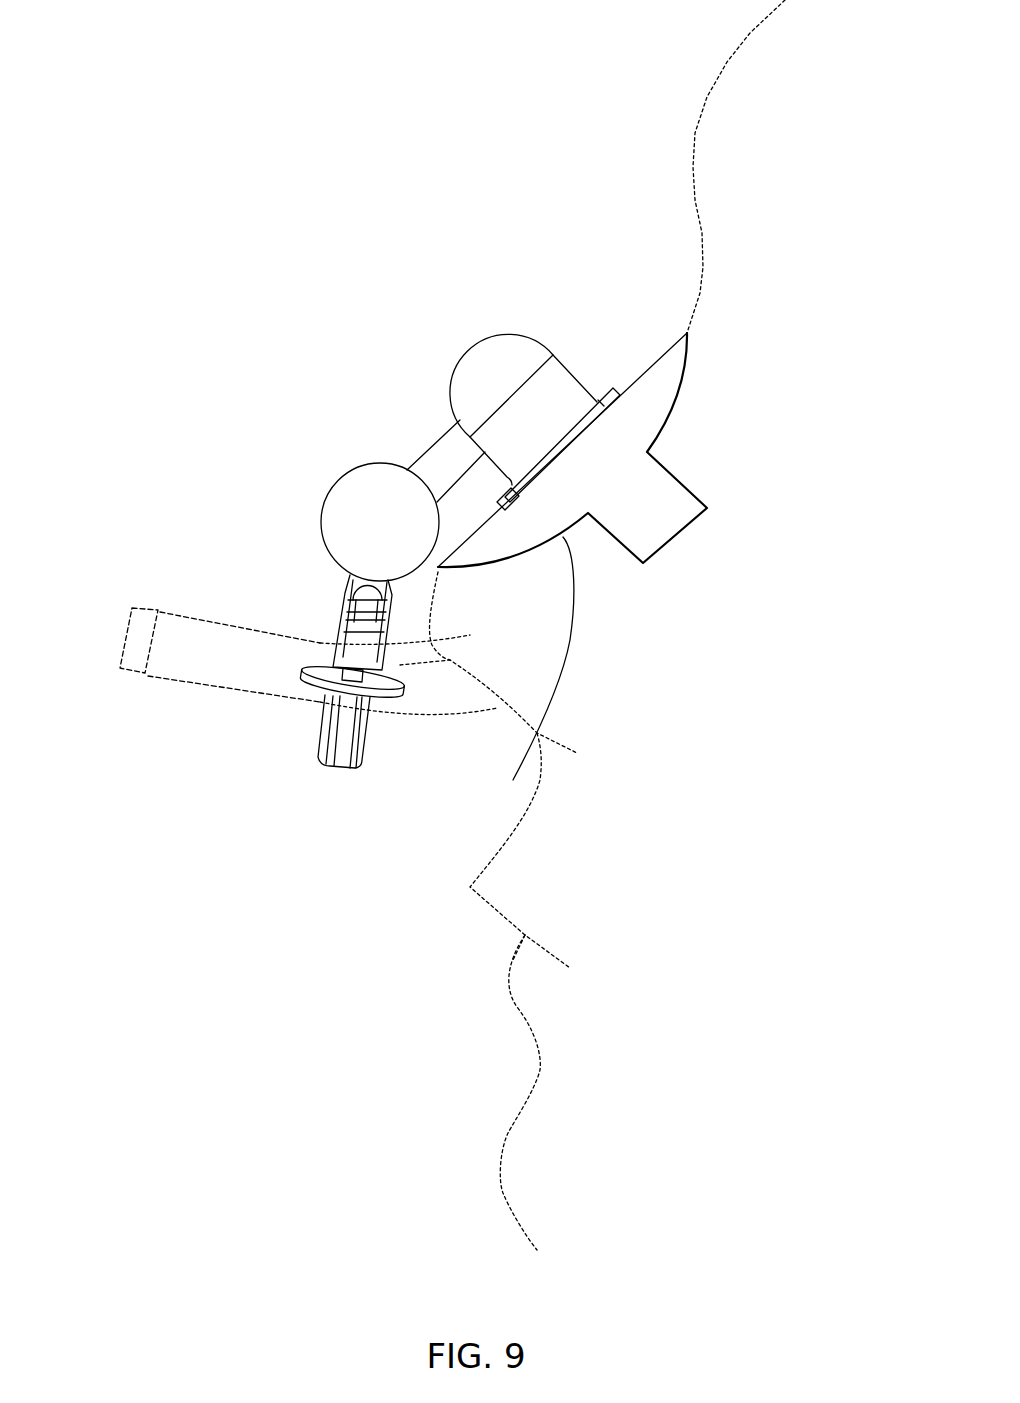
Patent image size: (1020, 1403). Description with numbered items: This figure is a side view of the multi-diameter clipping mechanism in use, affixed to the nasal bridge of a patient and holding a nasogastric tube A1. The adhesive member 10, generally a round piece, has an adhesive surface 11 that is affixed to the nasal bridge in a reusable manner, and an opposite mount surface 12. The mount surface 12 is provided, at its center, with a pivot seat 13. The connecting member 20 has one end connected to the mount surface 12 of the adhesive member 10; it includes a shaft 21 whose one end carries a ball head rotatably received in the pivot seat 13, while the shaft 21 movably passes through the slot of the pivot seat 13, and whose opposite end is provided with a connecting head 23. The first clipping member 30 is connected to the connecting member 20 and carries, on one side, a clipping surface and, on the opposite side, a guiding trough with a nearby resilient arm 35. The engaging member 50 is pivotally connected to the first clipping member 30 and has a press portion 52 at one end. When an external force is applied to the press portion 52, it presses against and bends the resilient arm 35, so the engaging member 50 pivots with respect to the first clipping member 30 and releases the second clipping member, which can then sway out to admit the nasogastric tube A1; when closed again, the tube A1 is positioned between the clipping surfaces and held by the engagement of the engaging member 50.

The adhesive member 10 is at (636, 355).
The adhesive surface 11 is at (513, 780).
The mount surface 12 is at (642, 390).
The pivot seat 13 is at (492, 360).
The connecting member 20 is at (317, 464).
The shaft 21 is at (438, 453).
The connecting head 23 is at (352, 527).
The first clipping member 30 is at (353, 615).
The resilient arm 35 is at (357, 650).
The engaging member 50 is at (347, 724).
The press portion 52 is at (405, 690).
The nasogastric tube A1 is at (187, 660).